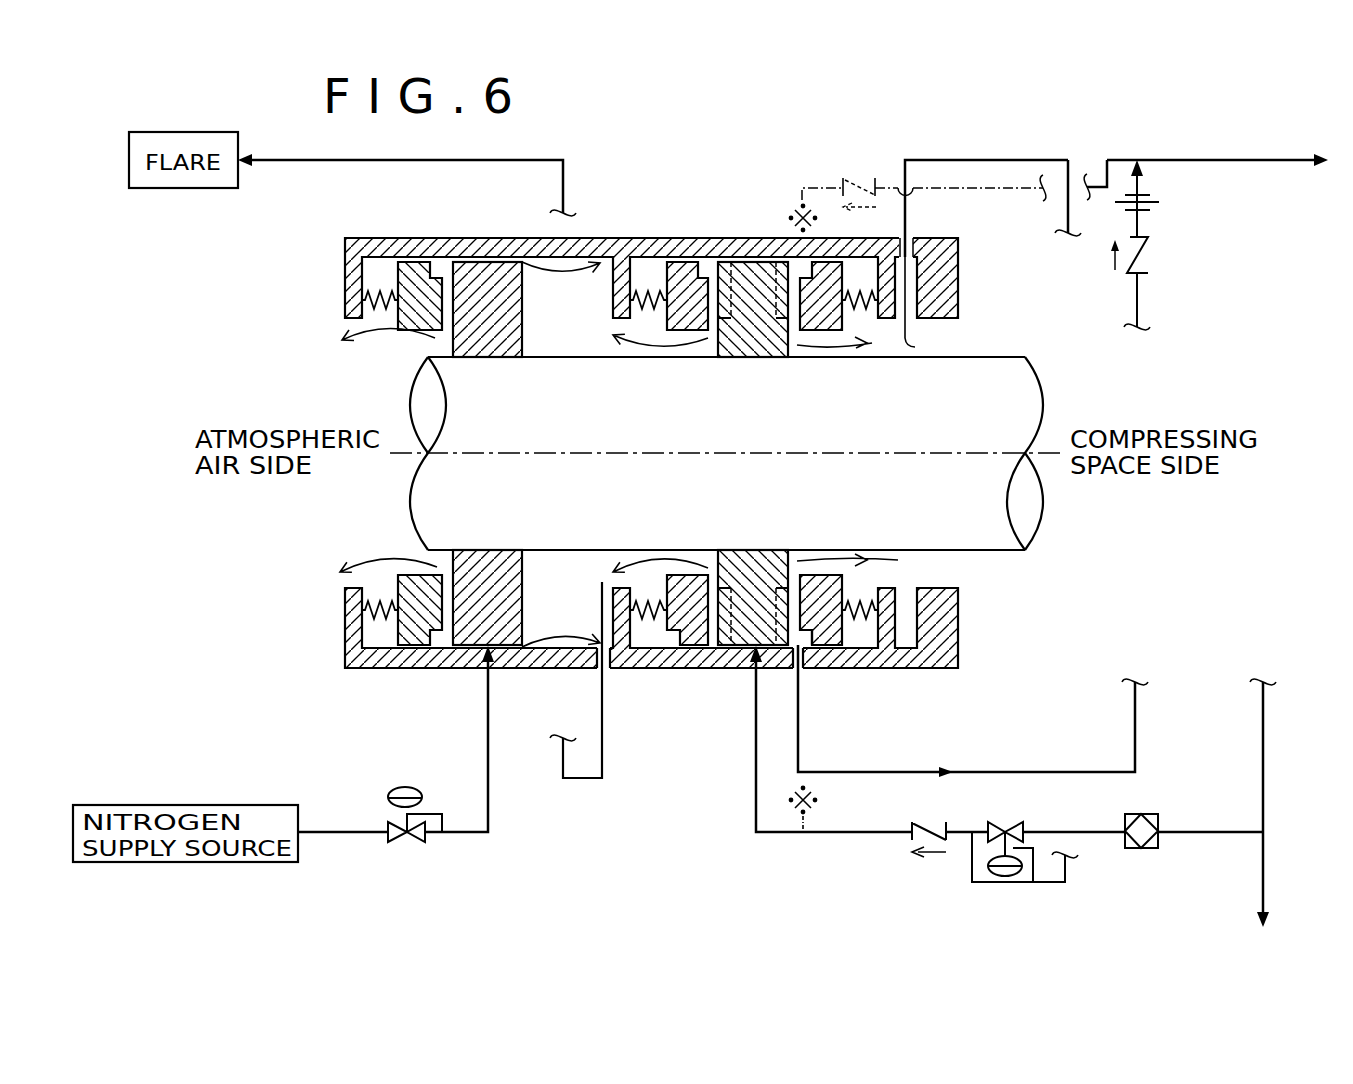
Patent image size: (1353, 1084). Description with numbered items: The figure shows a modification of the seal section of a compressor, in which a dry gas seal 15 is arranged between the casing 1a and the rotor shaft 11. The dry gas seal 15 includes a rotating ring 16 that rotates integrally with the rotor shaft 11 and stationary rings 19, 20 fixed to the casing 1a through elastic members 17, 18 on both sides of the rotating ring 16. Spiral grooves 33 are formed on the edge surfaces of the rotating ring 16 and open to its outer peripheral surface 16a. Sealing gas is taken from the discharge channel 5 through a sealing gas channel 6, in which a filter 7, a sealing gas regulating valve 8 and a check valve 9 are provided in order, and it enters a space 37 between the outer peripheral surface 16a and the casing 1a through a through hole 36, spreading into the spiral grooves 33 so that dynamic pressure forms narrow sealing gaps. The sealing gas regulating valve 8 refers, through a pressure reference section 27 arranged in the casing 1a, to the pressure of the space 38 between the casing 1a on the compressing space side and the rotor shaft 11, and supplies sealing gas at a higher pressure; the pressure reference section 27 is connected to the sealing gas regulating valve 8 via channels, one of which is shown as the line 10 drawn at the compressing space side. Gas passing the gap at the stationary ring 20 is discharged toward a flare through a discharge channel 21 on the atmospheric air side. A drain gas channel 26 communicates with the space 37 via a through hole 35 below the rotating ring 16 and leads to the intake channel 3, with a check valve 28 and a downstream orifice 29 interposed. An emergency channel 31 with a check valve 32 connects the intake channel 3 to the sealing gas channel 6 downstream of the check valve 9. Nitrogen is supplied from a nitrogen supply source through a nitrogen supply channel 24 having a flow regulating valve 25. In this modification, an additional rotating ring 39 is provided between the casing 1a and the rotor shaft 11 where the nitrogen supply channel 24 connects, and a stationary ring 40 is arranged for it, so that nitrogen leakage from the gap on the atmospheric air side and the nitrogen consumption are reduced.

The casing 1a is at (612, 240).
The intake channel 3 is at (1258, 162).
The discharge channel 5 is at (1265, 757).
The sealing gas channel 6 is at (1217, 835).
The filter 7 is at (1137, 850).
The sealing gas regulating valve 8 is at (1012, 878).
The check valve 9 is at (908, 838).
The vent pipe 10 is at (1068, 210).
The rotor shaft 11 is at (1054, 531).
The dry gas seal 15 is at (442, 272).
The rotating ring 16 is at (735, 648).
The outer peripheral surface 16a is at (738, 262).
The elastic member 17 is at (858, 648).
The elastic member 18 is at (652, 650).
The stationary ring 19 is at (830, 650).
The stationary ring 20 is at (680, 648).
The discharge channel 21 is at (320, 163).
The nitrogen supply channel 24 is at (335, 835).
The flow regulating valve 25 is at (403, 842).
The drain gas channel 26 is at (1135, 728).
The pressure reference section 27 is at (927, 160).
The check valve 28 is at (1147, 273).
The orifice 29 is at (1160, 205).
The emergency channel 31 is at (802, 190).
The check valve 32 is at (840, 182).
The spiral groove 33 is at (742, 272).
The through hole 35 is at (812, 648).
The through hole 36 is at (752, 650).
The space 37 is at (728, 648).
The space 38 is at (915, 347).
The rotating ring 39 is at (465, 645).
The stationary ring 40 is at (410, 640).